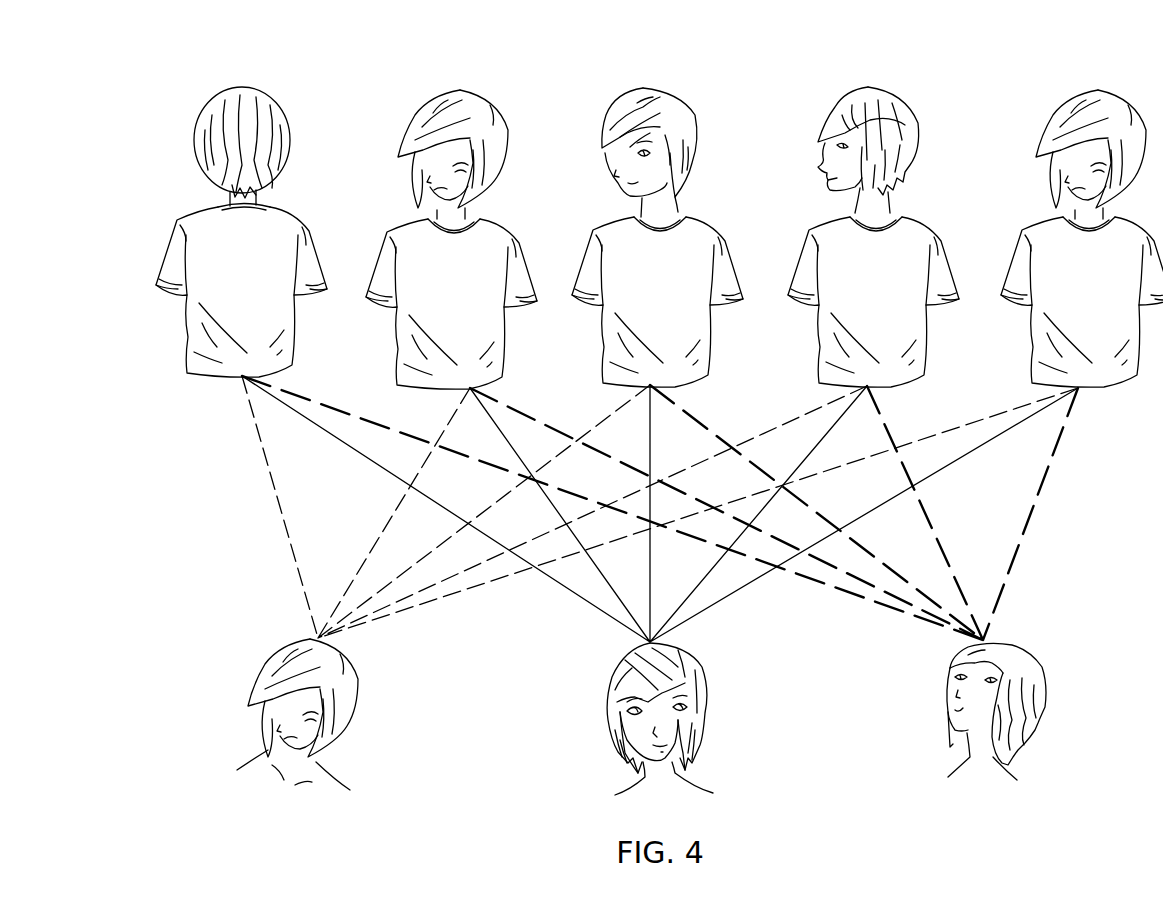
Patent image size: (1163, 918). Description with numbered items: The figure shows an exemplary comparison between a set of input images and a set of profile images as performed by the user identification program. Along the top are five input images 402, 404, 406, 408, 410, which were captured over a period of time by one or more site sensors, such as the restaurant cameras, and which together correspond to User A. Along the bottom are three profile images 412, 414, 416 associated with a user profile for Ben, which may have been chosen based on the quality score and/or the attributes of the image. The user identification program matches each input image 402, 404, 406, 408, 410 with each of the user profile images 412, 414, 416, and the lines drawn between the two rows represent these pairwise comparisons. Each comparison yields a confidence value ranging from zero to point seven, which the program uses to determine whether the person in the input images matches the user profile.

The input image 402 is at (244, 90).
The input image 404 is at (459, 90).
The input image 406 is at (647, 88).
The input image 408 is at (866, 88).
The input image 410 is at (1097, 90).
The profile image 412 is at (358, 690).
The profile image 414 is at (710, 688).
The profile image 416 is at (1048, 688).